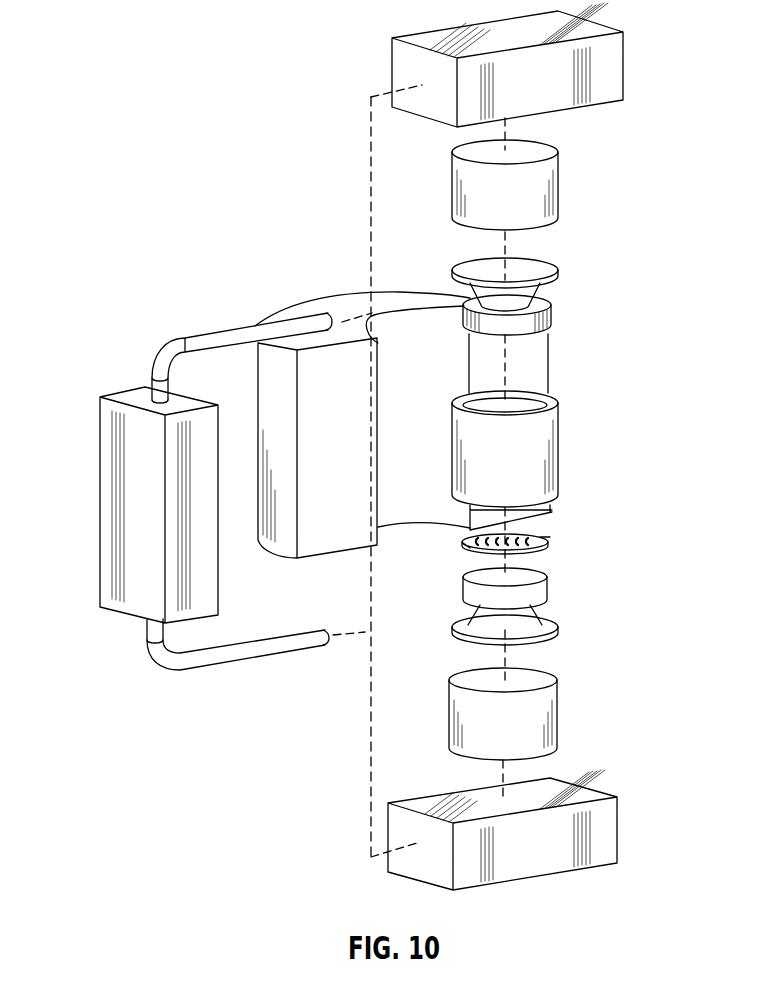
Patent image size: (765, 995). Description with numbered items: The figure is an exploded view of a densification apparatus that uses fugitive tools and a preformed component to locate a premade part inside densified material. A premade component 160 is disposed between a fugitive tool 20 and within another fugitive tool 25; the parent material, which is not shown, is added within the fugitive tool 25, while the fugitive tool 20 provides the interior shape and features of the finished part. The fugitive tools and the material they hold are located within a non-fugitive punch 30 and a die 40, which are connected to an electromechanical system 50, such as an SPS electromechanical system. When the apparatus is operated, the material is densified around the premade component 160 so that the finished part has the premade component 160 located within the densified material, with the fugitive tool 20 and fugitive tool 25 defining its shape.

The electromechanical system 50 is at (625, 65).
The non-fugitive punch 30 is at (560, 185).
The fugitive tool 20 is at (562, 272).
The fugitive tool 25 is at (545, 437).
The premade component 160 is at (553, 537).
The die 40 is at (363, 548).